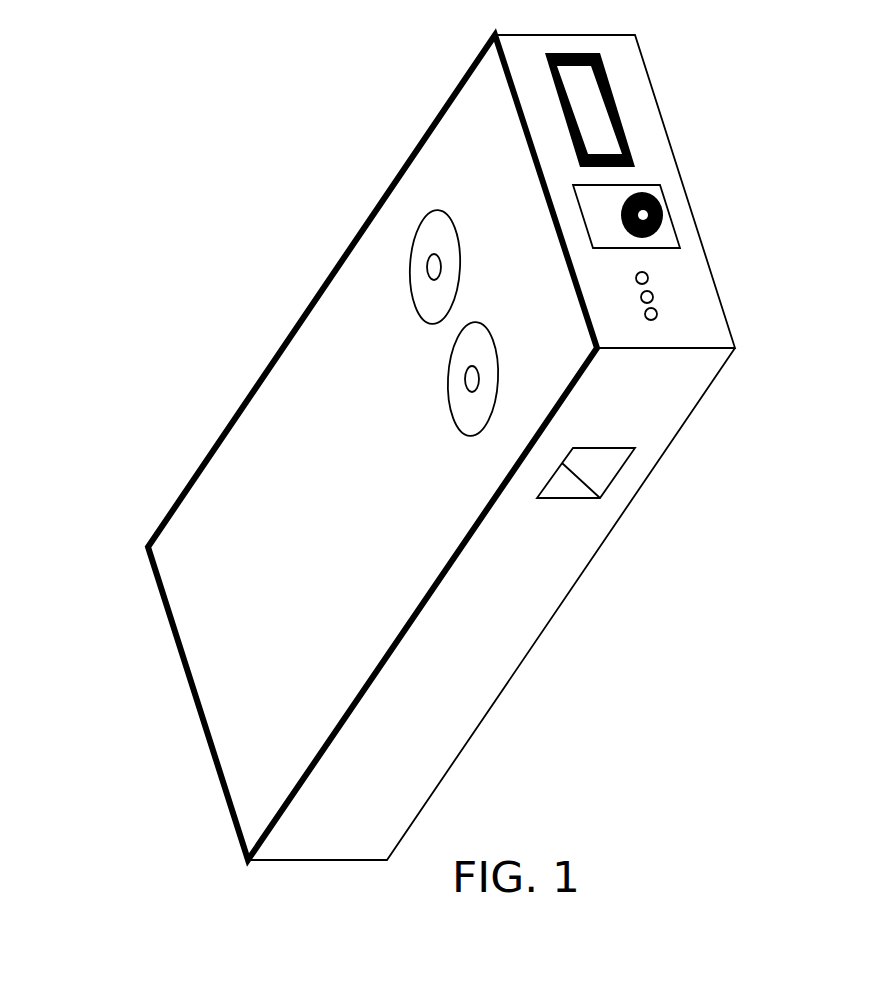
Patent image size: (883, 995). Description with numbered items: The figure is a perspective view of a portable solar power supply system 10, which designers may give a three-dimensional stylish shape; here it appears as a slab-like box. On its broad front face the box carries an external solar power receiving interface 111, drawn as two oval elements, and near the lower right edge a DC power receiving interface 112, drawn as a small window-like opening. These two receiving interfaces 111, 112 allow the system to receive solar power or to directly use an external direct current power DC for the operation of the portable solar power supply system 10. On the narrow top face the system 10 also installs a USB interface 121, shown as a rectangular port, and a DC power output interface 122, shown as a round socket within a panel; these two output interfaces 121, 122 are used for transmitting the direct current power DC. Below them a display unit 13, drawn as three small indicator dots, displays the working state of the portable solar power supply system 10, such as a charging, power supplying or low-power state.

The portable solar power supply system 10 is at (248, 400).
The external solar power receiving interface 111 is at (423, 235).
The DC power receiving interface 112 is at (597, 485).
The USB interface 121 is at (625, 118).
The DC power output interface 122 is at (673, 210).
The display unit 13 is at (662, 297).